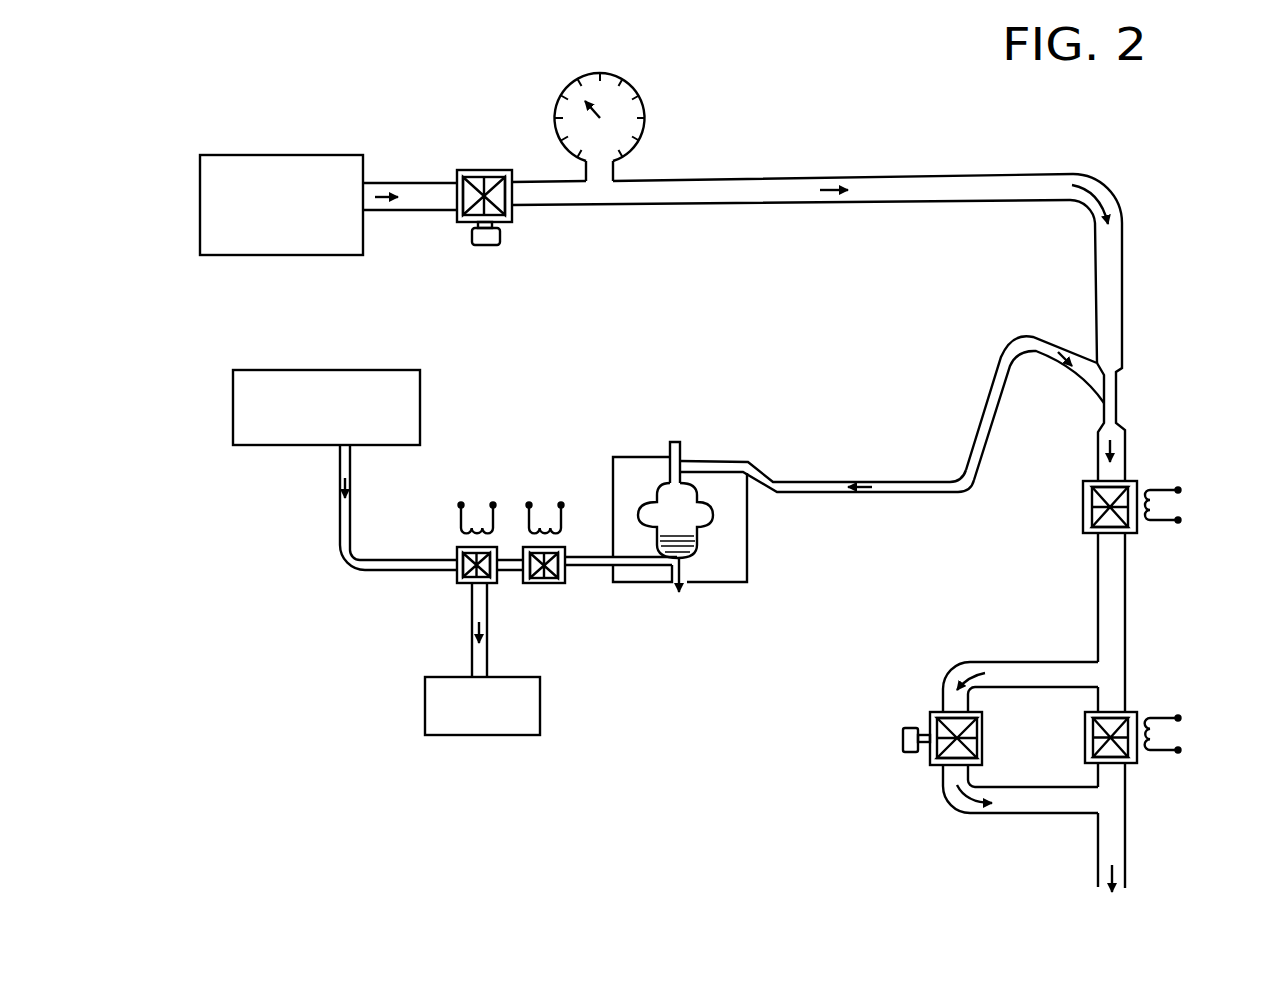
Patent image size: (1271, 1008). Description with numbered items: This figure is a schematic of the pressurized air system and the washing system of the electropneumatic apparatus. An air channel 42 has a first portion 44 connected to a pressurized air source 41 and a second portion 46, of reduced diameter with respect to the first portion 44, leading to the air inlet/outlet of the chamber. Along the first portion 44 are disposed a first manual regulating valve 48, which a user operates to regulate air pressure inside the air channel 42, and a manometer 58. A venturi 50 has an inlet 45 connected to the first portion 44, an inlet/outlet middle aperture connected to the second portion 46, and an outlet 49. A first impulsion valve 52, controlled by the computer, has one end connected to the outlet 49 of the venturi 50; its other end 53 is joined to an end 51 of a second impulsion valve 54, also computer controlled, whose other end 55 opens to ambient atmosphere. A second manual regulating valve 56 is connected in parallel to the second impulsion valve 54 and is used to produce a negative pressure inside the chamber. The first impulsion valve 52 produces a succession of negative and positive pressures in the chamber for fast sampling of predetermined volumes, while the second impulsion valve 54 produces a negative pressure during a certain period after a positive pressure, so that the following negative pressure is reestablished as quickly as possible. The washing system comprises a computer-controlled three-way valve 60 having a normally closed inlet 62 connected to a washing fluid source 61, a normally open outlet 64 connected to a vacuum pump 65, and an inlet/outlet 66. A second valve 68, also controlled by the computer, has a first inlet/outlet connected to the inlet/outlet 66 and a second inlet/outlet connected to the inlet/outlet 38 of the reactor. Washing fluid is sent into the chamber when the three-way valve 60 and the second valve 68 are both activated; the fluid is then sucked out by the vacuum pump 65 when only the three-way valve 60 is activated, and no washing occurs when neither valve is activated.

The inlet/outlet of the reactor 38 is at (612, 556).
The pressurized air source 41 is at (281, 247).
The air channel 42 is at (405, 226).
The first portion of the air channel 44 is at (427, 182).
The inlet of the venturi 45 is at (1100, 362).
The second portion of the air channel 46 is at (808, 482).
The first manual regulating valve 48 is at (491, 170).
The outlet of the venturi 49 is at (1106, 428).
The venturi 50 is at (1112, 402).
The end of the second impulsion valve 51 is at (1118, 710).
The first impulsion valve 52 is at (1092, 510).
The other end of the first impulsion valve 53 is at (1110, 538).
The second impulsion valve 54 is at (1136, 765).
The another end of the second impulsion valve 55 is at (1108, 766).
The second manual regulating valve 56 is at (930, 714).
The manometer 58 is at (641, 112).
The three-way valve 60 is at (447, 548).
The washing fluid source 61 is at (412, 417).
The normally closed inlet 62 is at (449, 572).
The normally open outlet 64 is at (483, 606).
The vacuum pump 65 is at (425, 730).
The inlet/outlet of the three-way valve 66 is at (500, 556).
The second valve 68 is at (571, 592).